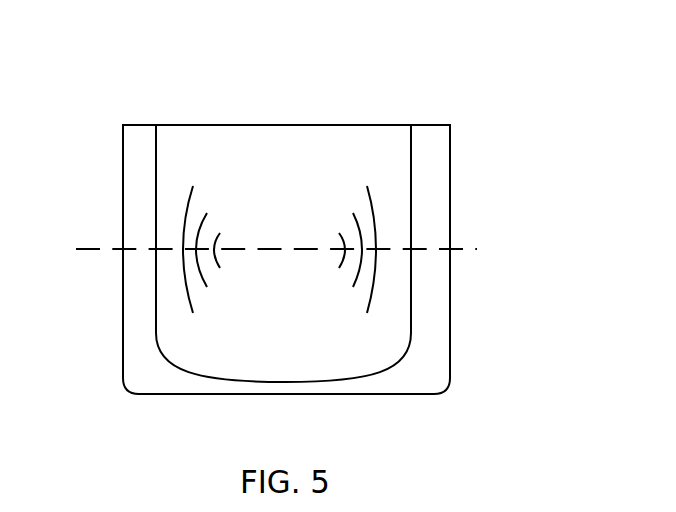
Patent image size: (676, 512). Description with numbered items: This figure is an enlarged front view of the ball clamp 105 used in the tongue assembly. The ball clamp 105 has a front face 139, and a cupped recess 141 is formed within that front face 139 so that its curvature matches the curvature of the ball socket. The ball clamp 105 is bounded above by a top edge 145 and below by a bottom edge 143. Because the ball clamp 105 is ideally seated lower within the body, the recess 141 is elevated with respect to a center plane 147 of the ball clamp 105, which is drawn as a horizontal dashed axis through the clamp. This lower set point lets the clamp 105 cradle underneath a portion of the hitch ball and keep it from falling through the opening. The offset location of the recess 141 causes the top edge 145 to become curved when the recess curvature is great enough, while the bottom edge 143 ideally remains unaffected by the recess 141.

The ball clamp 105 is at (497, 89).
The front face 139 is at (427, 343).
The cupped recess 141 is at (278, 151).
The bottom edge 143 is at (187, 395).
The top edge 145 is at (182, 125).
The center plane 147 is at (87, 249).